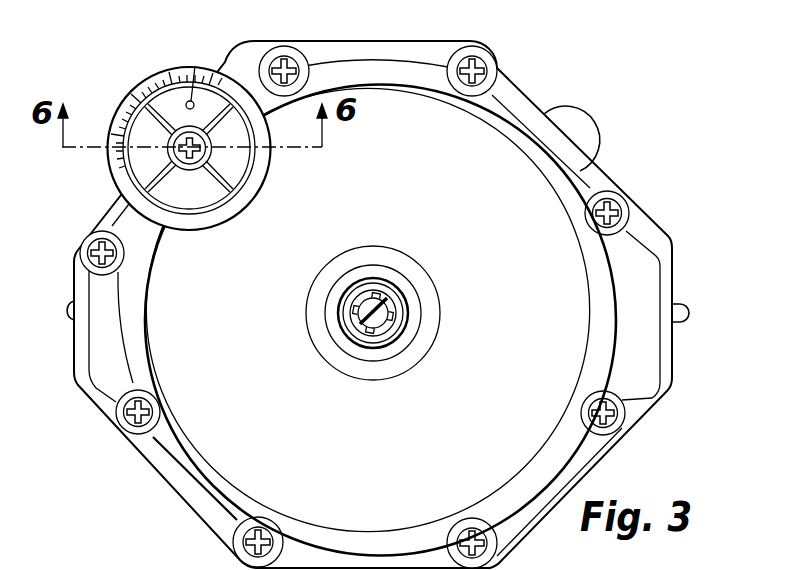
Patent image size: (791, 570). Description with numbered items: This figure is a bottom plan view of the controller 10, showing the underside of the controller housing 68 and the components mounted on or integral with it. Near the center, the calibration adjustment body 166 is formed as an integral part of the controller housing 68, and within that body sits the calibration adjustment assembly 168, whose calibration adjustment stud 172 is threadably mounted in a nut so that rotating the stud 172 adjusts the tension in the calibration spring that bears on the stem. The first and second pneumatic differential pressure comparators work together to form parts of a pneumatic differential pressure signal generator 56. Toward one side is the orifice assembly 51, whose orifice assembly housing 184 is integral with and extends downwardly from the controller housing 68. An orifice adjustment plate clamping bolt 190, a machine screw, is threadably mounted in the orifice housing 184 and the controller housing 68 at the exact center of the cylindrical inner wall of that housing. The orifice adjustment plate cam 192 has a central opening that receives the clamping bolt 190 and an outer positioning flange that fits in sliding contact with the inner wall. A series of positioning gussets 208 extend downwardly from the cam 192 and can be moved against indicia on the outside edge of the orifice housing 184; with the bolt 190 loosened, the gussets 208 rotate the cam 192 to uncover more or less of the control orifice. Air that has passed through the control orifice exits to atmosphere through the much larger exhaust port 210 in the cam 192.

The housing 10 is at (134, 466).
The orifice assembly 51 is at (174, 238).
The pneumatic differential pressure signal generator 56 is at (422, 363).
The controller housing 68 is at (558, 437).
The calibration adjustment body 166 is at (337, 357).
The calibration adjustment assembly 168 is at (439, 279).
The calibration adjustment stud 172 is at (350, 311).
The orifice assembly housing 184 is at (118, 174).
The orifice adjustment plate clamping bolt 190 is at (195, 178).
The orifice adjustment plate cam 192 is at (233, 161).
The positioning gussets 208 is at (158, 120).
The exhaust port 210 is at (195, 66).